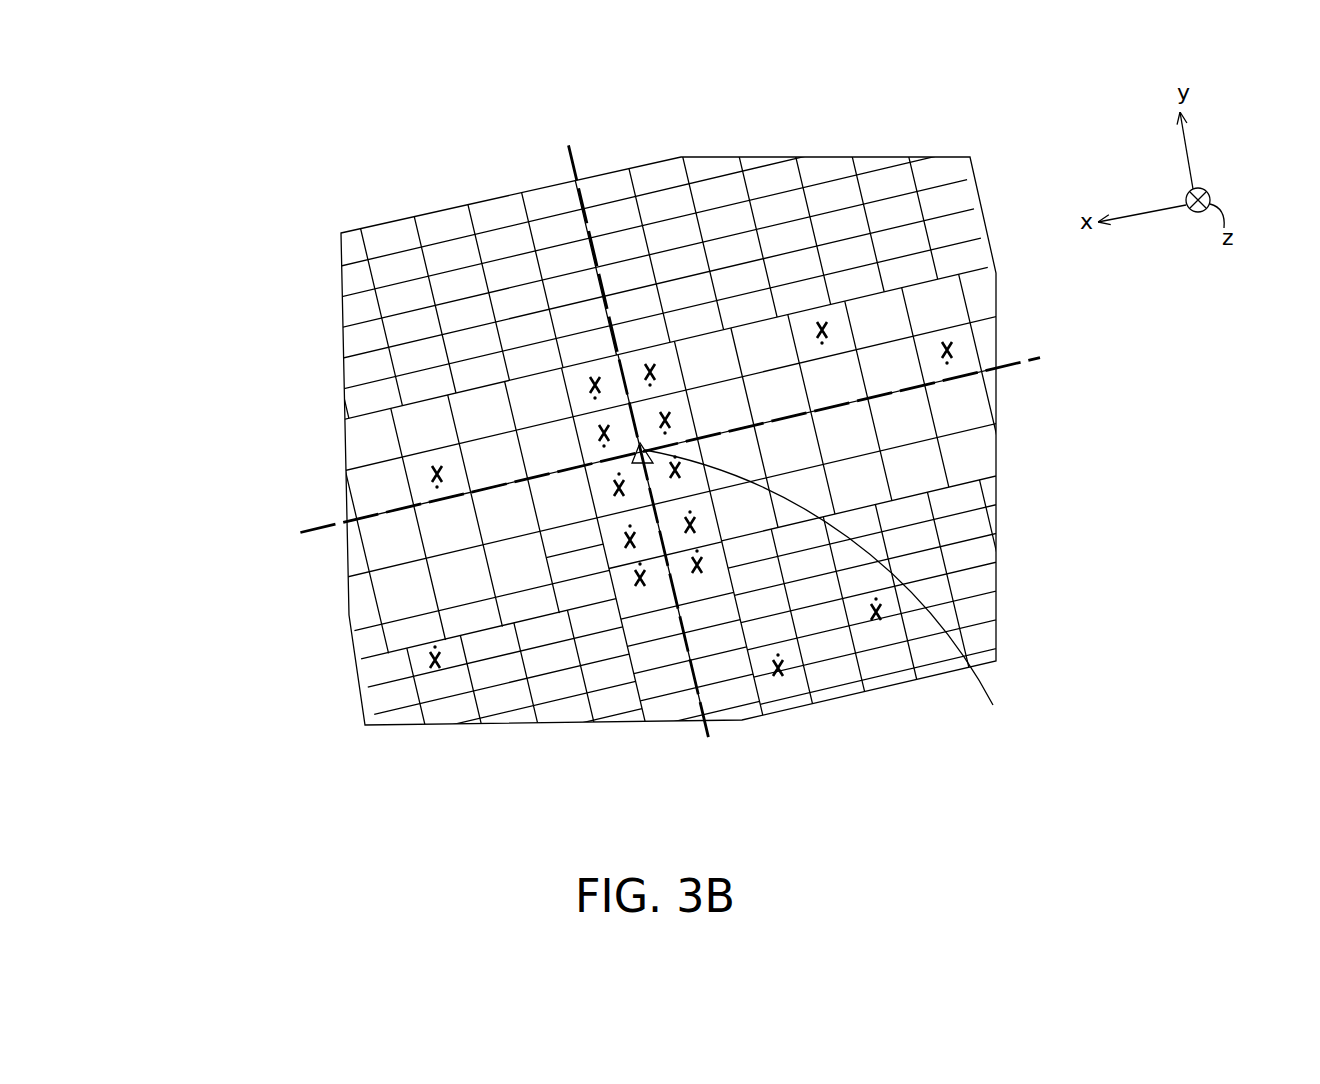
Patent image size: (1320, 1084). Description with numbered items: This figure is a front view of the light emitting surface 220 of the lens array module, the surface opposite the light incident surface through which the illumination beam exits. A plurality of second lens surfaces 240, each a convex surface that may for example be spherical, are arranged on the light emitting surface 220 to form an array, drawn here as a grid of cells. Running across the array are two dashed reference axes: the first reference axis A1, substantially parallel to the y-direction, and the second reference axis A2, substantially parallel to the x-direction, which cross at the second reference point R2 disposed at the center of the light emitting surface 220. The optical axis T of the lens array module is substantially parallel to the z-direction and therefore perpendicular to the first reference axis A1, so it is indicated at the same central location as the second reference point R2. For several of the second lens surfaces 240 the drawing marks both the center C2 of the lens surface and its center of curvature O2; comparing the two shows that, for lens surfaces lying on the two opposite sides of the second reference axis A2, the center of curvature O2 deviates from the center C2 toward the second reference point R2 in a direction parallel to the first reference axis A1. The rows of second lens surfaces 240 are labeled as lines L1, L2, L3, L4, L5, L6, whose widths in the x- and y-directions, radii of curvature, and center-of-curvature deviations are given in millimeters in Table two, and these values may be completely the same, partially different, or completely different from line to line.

The light emitting surface 220 is at (1148, 820).
The second lens surfaces 240 is at (383, 545).
The line L1 is at (325, 407).
The line L2 is at (325, 459).
The line L3 is at (325, 521).
The line L4 is at (325, 572).
The line L5 is at (325, 624).
The line L6 is at (325, 660).
The first reference axis A1 is at (719, 745).
The second reference axis A2 is at (1015, 372).
The center of curvature O2 is at (618, 475).
The center of the second lens surface C2 is at (641, 590).
The second reference point R2 is at (836, 599).
The optical axis T is at (642, 453).